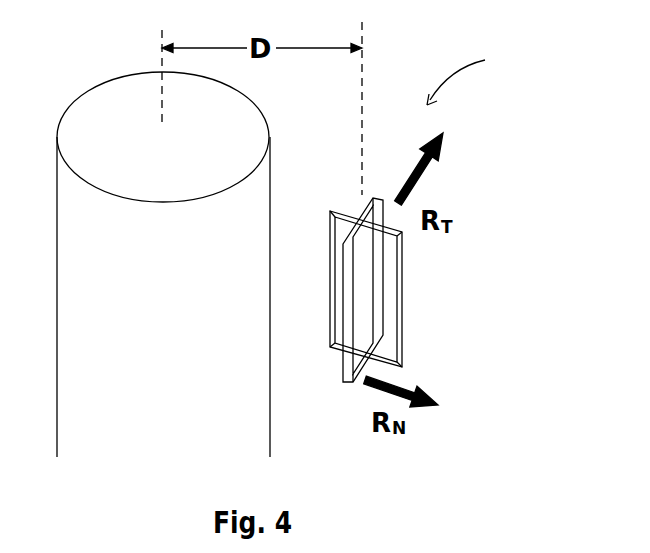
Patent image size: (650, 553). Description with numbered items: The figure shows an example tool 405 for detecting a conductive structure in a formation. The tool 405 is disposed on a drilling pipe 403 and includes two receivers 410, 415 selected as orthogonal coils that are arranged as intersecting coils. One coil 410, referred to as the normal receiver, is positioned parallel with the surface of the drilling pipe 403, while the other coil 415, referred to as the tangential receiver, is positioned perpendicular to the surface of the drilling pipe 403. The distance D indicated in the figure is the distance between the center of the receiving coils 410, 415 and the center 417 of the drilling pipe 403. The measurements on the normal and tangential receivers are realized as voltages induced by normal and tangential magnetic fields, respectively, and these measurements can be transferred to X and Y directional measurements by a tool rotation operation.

The drilling pipe 403 is at (270, 139).
The center of the drilling pipe 417 is at (160, 39).
The tool 405 is at (475, 75).
The receiver coil R_T 415 is at (404, 280).
The receiver coil R_N 410 is at (352, 381).